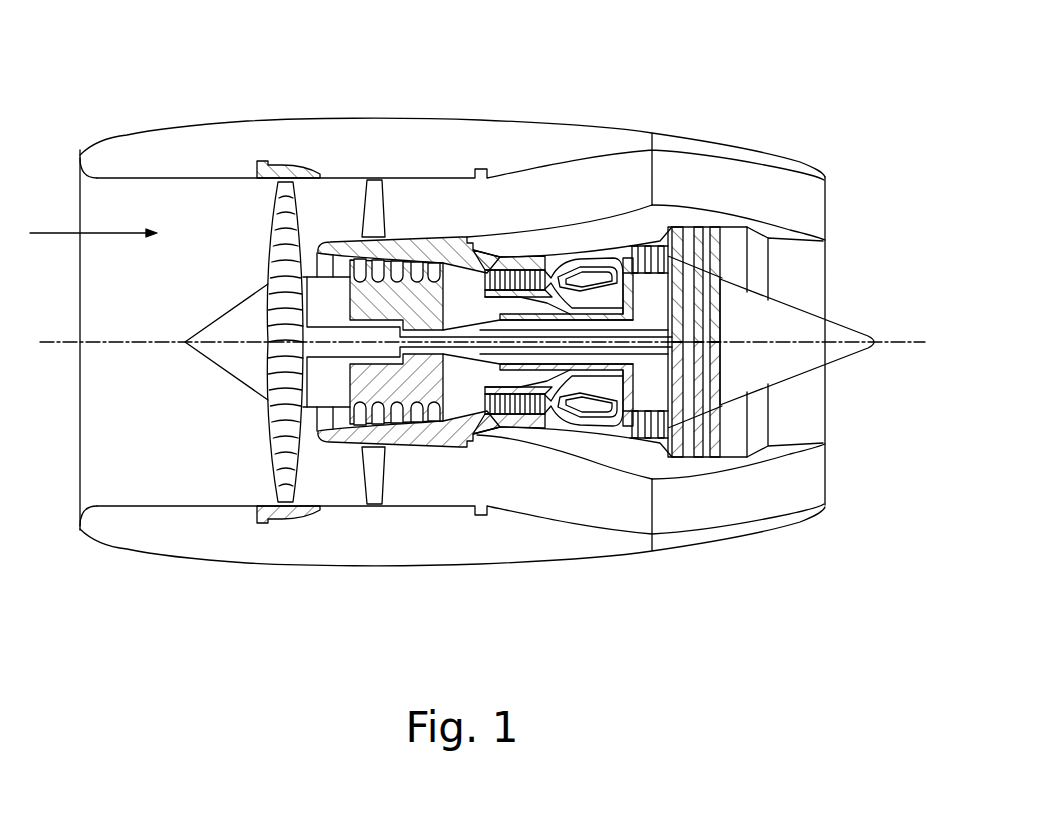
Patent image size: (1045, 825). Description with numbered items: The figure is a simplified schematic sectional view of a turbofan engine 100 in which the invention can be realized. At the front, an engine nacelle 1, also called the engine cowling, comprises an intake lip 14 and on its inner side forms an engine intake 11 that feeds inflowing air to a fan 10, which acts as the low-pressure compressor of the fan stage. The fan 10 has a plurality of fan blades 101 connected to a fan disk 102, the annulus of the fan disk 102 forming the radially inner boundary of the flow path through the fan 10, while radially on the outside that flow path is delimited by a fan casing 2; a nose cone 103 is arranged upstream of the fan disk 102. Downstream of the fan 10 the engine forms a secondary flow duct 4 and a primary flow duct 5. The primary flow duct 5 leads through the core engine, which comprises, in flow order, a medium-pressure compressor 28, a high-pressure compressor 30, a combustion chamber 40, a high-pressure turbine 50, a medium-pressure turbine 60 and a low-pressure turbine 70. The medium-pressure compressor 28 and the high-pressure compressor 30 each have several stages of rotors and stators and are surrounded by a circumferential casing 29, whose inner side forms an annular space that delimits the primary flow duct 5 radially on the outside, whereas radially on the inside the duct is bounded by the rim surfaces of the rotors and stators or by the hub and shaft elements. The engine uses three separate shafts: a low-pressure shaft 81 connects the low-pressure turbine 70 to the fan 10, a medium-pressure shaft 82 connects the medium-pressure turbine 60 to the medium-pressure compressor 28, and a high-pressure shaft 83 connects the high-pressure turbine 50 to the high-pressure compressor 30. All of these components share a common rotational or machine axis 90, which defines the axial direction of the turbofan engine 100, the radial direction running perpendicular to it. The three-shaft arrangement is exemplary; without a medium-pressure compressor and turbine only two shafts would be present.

The engine nacelle 1 is at (137, 147).
The fan casing 2 is at (273, 163).
The secondary flow duct 4 is at (323, 190).
The primary flow duct 5 is at (402, 233).
The fan 10 is at (262, 254).
The engine intake 11 is at (115, 183).
The intake lip 14 is at (80, 150).
The medium-pressure compressor 28 is at (412, 236).
The circumferential casing 29 is at (458, 228).
The high-pressure compressor 30 is at (513, 294).
The combustion chamber 40 is at (578, 263).
The high-pressure turbine 50 is at (641, 252).
The medium-pressure turbine 60 is at (670, 241).
The low-pressure turbine 70 is at (725, 251).
The low-pressure shaft 81 is at (522, 418).
The medium-pressure shaft 82 is at (573, 414).
The high-pressure shaft 83 is at (604, 414).
The rotational axis 90 is at (892, 341).
The turbofan engine 100 is at (522, 117).
The fan blades 101 is at (283, 446).
The fan disk 102 is at (252, 385).
The nose cone 103 is at (218, 319).